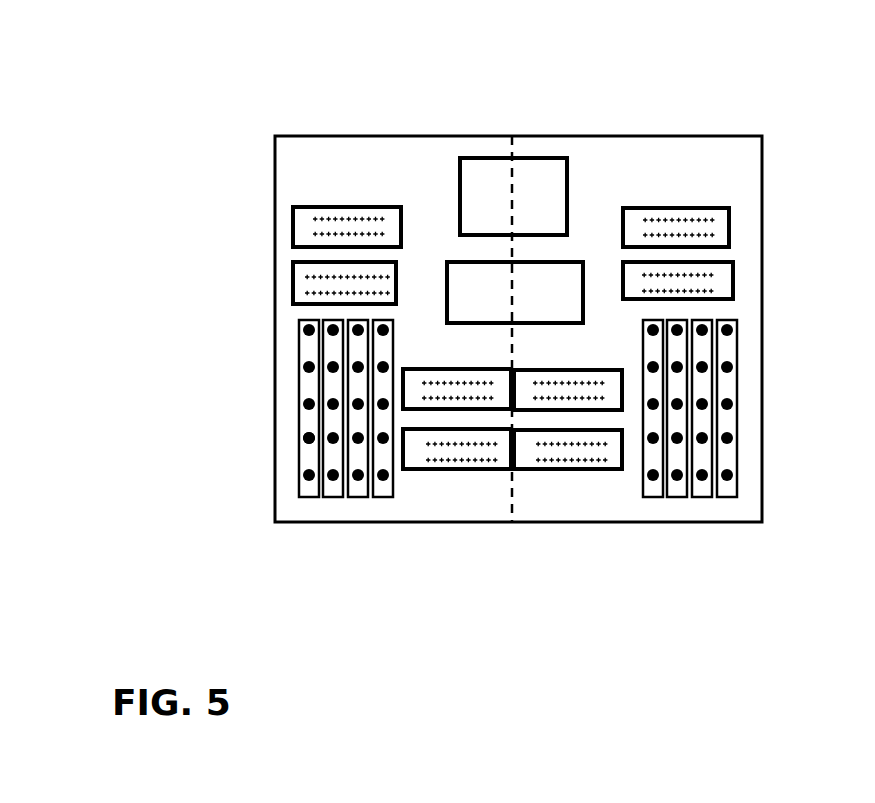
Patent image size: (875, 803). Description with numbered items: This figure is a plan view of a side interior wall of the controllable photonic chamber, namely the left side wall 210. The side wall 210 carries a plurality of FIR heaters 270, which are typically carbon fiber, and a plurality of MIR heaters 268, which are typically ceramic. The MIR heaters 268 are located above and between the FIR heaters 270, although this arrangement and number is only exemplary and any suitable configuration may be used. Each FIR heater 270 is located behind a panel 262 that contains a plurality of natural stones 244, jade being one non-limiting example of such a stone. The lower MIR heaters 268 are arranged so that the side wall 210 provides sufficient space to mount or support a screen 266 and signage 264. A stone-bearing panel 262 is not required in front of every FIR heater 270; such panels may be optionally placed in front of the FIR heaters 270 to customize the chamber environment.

The left side wall 210 is at (486, 117).
The screen 266 is at (542, 168).
The signage 264 is at (572, 274).
The MIR heaters 268 is at (289, 283).
The FIR heaters 270 is at (314, 507).
The panel 262 is at (737, 497).
The natural stones 244 is at (308, 437).